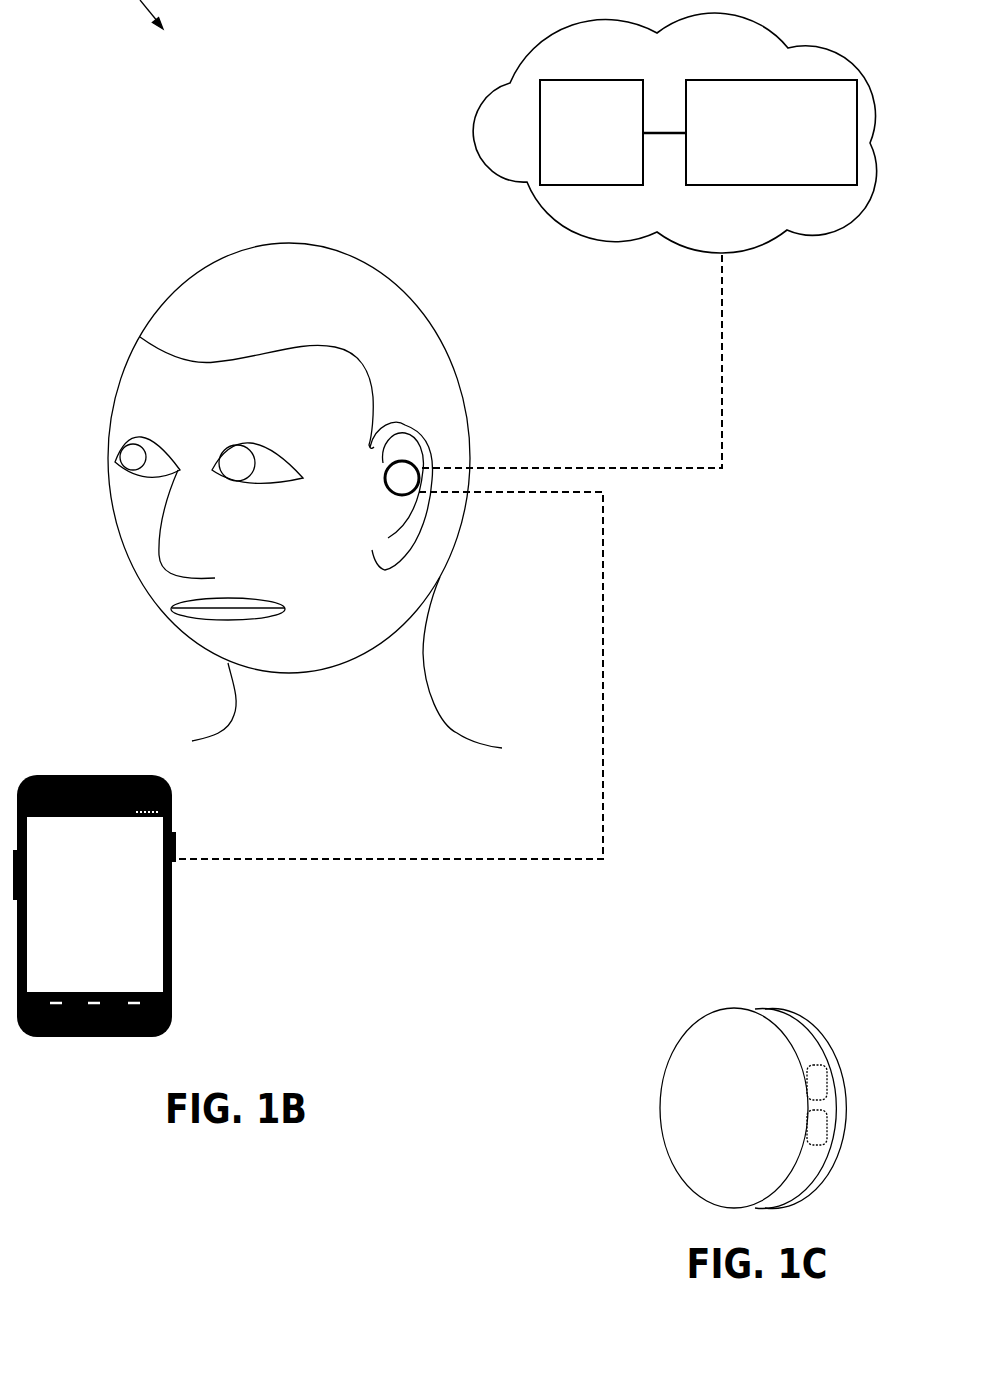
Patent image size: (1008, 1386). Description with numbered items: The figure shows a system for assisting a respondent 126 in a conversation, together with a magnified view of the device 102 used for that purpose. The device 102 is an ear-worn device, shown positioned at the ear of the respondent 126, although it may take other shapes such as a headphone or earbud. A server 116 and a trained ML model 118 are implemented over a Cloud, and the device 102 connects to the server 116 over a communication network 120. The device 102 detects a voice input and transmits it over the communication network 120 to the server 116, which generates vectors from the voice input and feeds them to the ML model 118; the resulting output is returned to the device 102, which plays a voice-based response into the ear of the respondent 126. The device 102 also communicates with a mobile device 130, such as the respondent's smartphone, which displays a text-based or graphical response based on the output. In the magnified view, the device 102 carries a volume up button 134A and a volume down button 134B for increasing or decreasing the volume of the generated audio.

In FIG. 1B, the device 102 is at (402, 461).
In FIG. 1C, the device 102 is at (687, 990).
In FIG. 1B, the server 116 is at (591, 132).
In FIG. 1B, the ML model 118 is at (771, 132).
In FIG. 1B, the communication network 120 is at (722, 383).
In FIG. 1B, the respondent 126 is at (188, 297).
In FIG. 1B, the mobile device 130 is at (94, 906).
In FIG. 1C, the volume up button 134A is at (826, 1073).
In FIG. 1C, the volume down button 134B is at (827, 1137).